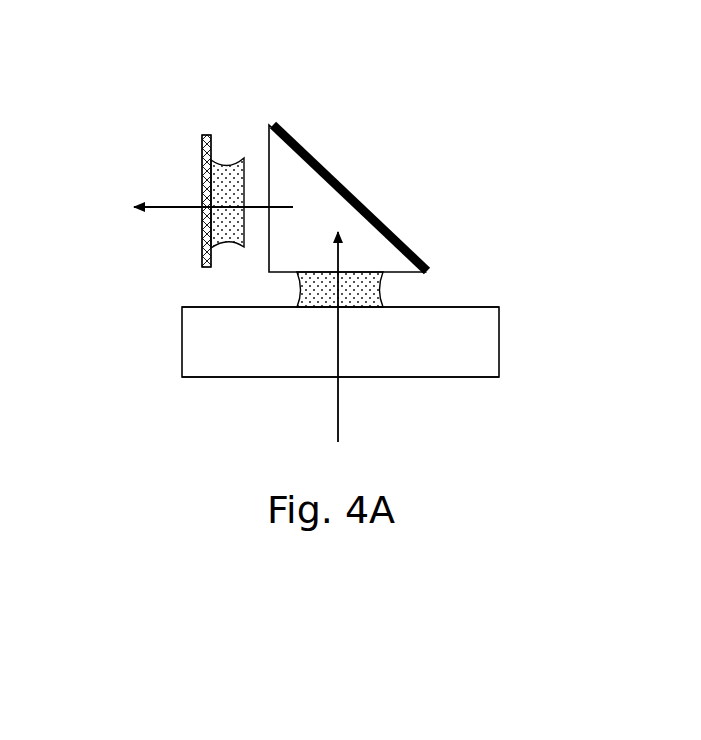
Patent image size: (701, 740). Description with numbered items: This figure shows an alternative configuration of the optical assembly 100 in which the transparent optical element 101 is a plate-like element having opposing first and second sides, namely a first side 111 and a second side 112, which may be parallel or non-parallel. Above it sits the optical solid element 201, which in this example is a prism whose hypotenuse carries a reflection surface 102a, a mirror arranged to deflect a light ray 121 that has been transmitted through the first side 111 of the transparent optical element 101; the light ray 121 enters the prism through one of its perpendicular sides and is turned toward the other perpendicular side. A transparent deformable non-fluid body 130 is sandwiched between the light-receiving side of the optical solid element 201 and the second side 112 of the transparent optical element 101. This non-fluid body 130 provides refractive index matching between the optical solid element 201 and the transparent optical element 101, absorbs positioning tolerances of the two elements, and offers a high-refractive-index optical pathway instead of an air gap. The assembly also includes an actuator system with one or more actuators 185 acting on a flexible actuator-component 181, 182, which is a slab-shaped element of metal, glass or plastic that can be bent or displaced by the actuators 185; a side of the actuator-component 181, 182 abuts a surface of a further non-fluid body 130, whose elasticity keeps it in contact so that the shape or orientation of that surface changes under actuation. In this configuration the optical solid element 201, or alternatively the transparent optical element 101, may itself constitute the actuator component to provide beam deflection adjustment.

The optical assembly 100 is at (64, 51).
The transparent optical element 101 is at (190, 347).
The first side 111 is at (450, 383).
The second side 112 is at (487, 300).
The light ray 121 is at (133, 210).
The deformable non-fluid body 130 is at (223, 177).
The actuator-component 181 is at (200, 180).
The actuator-component 182 is at (390, 227).
The actuators 185 is at (202, 142).
The optical solid element 201 is at (277, 150).
The reflection surface 102a is at (310, 148).